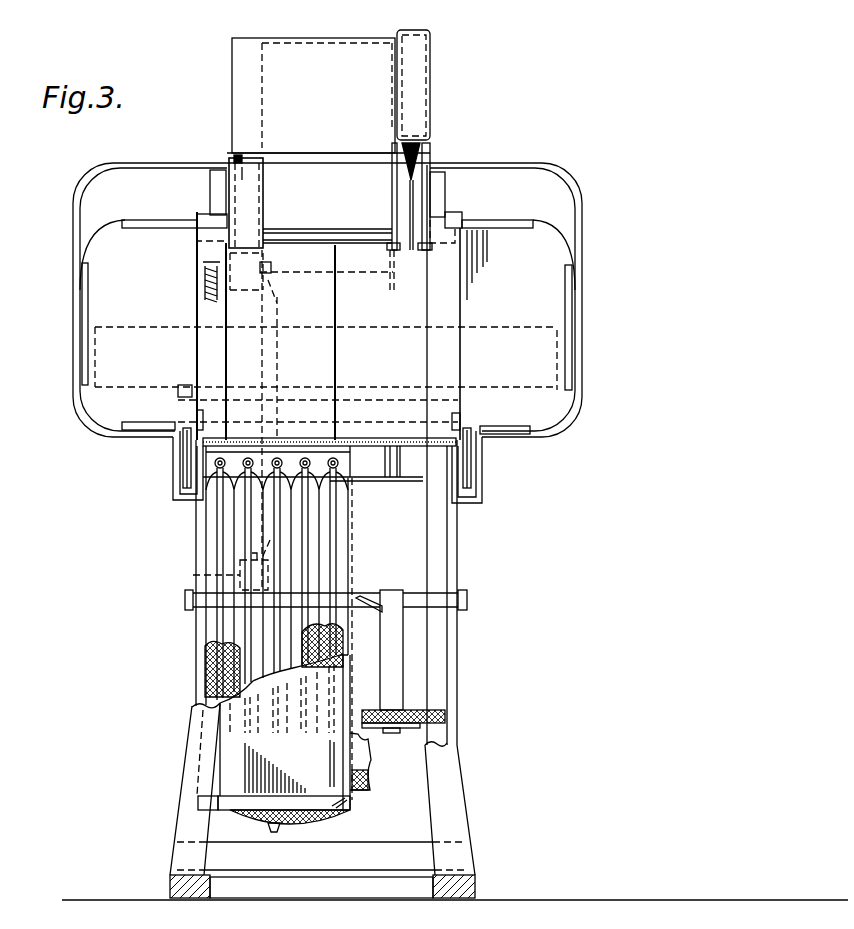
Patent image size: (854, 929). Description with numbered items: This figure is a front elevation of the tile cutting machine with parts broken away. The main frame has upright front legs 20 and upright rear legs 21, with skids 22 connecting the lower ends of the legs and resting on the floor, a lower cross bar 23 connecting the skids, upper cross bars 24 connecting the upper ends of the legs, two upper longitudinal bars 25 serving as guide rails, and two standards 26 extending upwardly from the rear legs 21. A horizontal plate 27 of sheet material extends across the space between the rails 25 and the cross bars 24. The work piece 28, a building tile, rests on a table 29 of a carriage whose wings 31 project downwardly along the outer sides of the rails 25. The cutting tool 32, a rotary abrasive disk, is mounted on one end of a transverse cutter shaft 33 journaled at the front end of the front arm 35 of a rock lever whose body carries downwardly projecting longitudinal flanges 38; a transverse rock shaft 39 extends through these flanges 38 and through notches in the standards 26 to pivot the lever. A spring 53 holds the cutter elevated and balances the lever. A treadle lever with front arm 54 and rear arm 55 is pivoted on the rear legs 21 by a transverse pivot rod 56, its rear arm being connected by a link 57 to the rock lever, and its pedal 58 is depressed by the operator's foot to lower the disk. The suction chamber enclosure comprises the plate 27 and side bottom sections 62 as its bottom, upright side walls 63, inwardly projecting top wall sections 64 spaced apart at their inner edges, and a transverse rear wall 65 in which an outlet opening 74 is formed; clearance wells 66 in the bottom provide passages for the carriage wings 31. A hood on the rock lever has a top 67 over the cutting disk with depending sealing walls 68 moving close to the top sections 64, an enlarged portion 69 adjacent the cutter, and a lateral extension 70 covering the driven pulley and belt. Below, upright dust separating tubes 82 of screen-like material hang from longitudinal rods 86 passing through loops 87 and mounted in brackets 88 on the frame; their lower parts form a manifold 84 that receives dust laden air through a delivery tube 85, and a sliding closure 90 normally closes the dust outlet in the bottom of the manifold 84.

The upright front legs 20 is at (202, 773).
The upright rear legs 21 is at (197, 558).
The skids 22 is at (170, 880).
The lower cross bar 23 is at (321, 870).
The upper cross bars 24 is at (388, 461).
The upper longitudinal bars 25 is at (197, 418).
The standards 26 is at (198, 338).
The plate 27 is at (329, 434).
The work piece 28 is at (536, 349).
The table 29 is at (185, 386).
The wings 31 is at (173, 462).
The cutting tool 32 is at (410, 250).
The cutter shaft 33 is at (397, 148).
The front arm 35 is at (327, 216).
The longitudinal flanges 38 is at (264, 200).
The rock shaft 39 is at (492, 212).
The spring 53 is at (203, 291).
The front arm of treadle lever 54 is at (397, 677).
The rear arm of treadle lever 55 is at (193, 580).
The pivot rod 56 is at (412, 596).
The link 57 is at (268, 357).
The pedal 58 is at (445, 717).
The side bottom sections 62 is at (143, 438).
The side walls 63 is at (76, 288).
The top wall sections 64 is at (155, 163).
The rear wall 65 is at (495, 265).
The clearance wells 66 is at (175, 480).
The hood top 67 is at (313, 95).
The sealing walls 68 is at (210, 200).
The enlarged hood portion 69 is at (418, 93).
The lateral hood extension 70 is at (240, 165).
The outlet opening 74 is at (337, 310).
The dust separating tubes 82 is at (202, 672).
The manifold 84 is at (286, 825).
The delivery tube 85 is at (365, 757).
The longitudinal rod 86 is at (340, 465).
The loops 87 is at (328, 455).
The brackets 88 is at (367, 478).
The sliding closure 90 is at (282, 827).